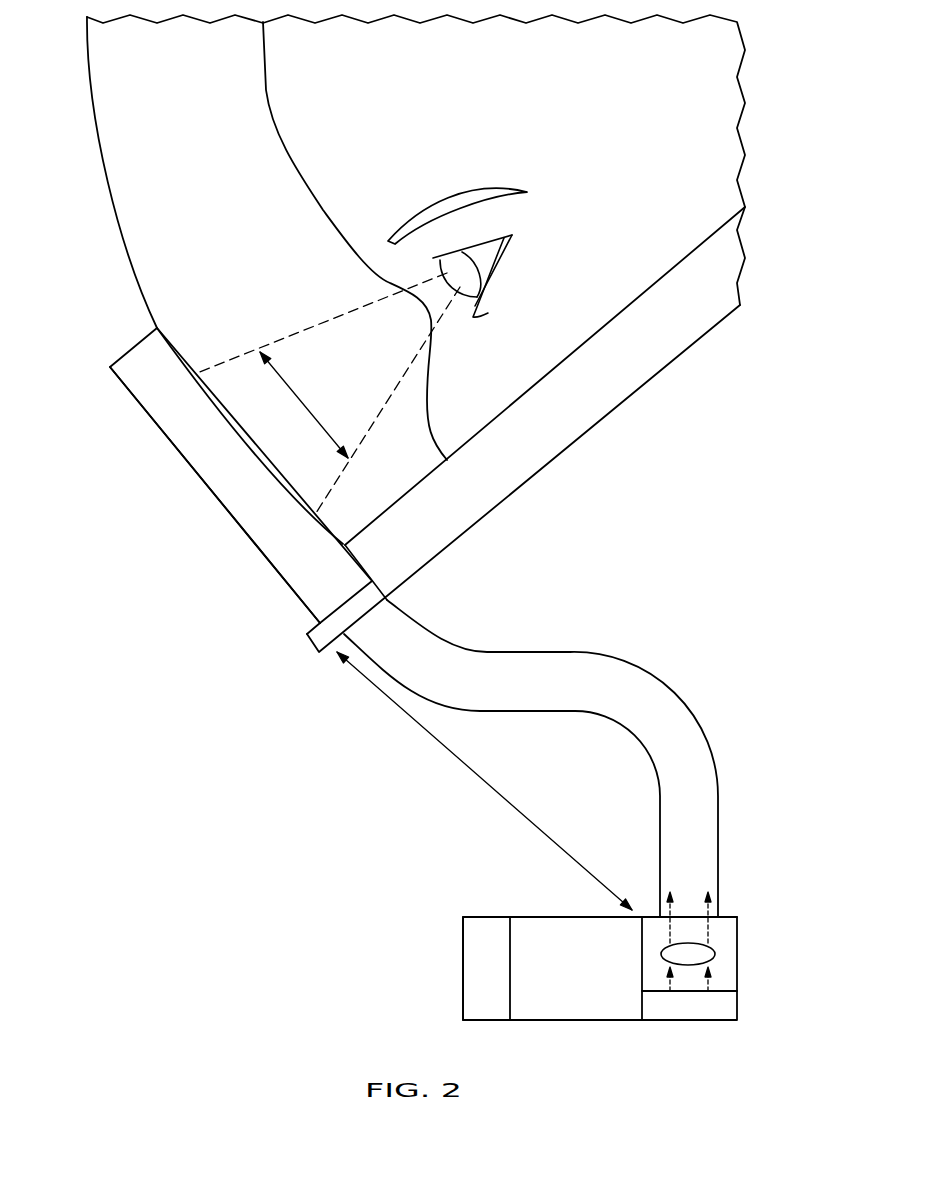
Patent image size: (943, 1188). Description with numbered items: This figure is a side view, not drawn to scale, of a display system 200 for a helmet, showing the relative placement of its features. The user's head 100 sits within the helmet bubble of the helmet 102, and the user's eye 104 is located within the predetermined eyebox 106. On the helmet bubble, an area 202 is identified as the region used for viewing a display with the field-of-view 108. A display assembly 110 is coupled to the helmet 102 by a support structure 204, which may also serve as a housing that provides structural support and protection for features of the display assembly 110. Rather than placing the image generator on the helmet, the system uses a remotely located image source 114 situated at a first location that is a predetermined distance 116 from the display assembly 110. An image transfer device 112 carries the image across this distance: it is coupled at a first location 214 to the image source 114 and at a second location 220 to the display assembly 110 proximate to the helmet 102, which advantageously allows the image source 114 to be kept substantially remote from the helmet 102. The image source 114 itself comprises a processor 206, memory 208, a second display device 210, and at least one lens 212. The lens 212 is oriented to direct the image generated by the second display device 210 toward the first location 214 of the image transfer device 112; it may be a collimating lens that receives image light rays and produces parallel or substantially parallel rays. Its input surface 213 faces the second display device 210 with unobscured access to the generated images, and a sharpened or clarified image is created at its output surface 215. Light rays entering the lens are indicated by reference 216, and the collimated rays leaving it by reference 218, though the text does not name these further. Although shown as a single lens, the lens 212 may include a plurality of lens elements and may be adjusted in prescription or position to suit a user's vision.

The user's head 100 is at (267, 100).
The helmet 102 is at (103, 172).
The user's eye 104 is at (490, 247).
The predetermined eyebox 106 is at (520, 235).
The field-of-view 108 is at (302, 402).
The display assembly 110 is at (257, 531).
The image transfer device 112 is at (575, 652).
The image source 114 is at (487, 917).
The predetermined distance 116 is at (487, 786).
The display system 200 is at (325, 798).
The area 202 is at (202, 405).
The support structure 204 is at (655, 373).
The processor 206 is at (575, 1003).
The memory 208 is at (480, 964).
The second display device 210 is at (728, 1005).
The lens 212 is at (713, 955).
The input surface 213 is at (692, 973).
The first location 214 is at (720, 915).
The output surface 215 is at (693, 922).
The input light rays 216 is at (670, 985).
The collimated light rays 218 is at (668, 928).
The second location 220 is at (389, 601).